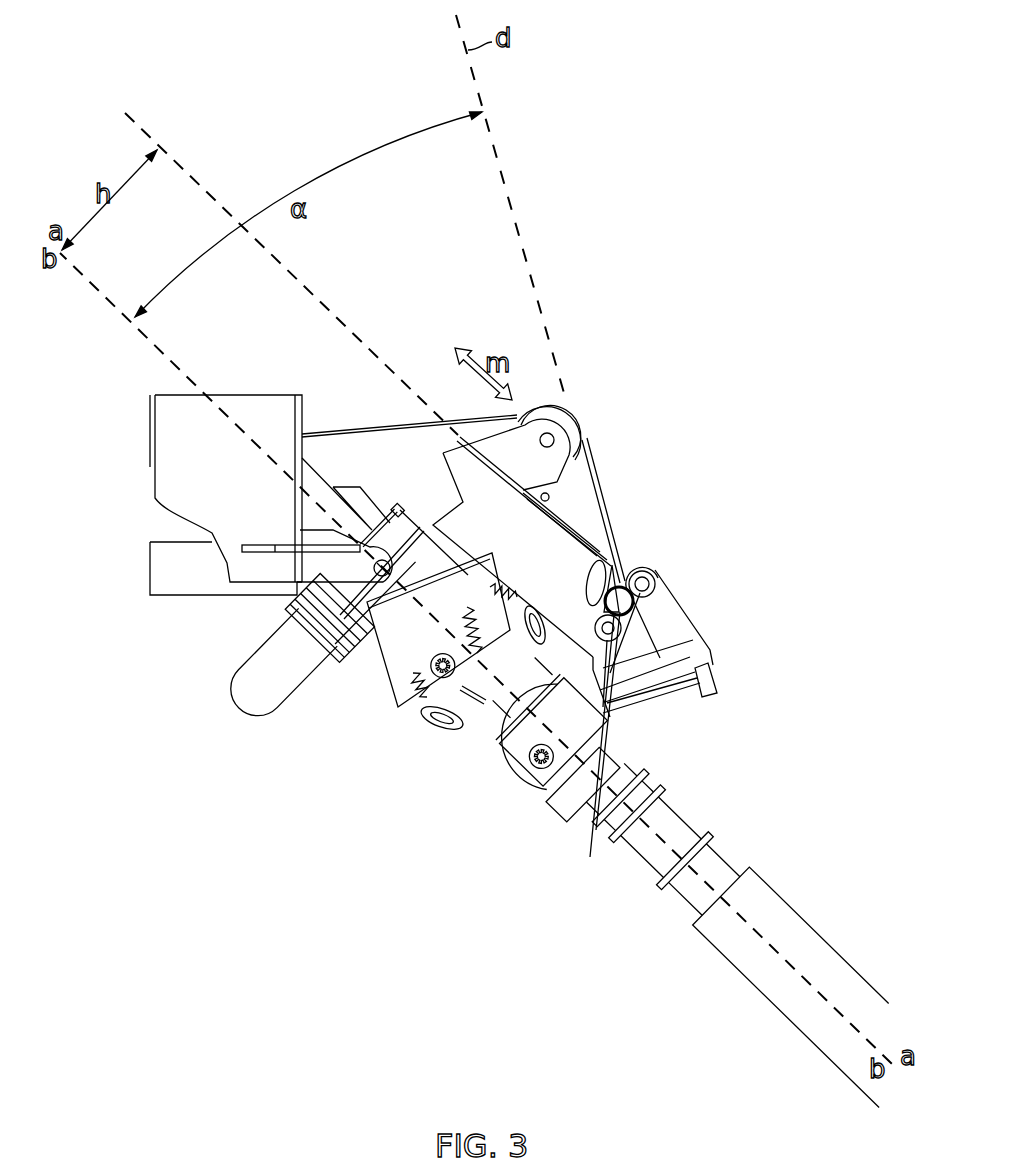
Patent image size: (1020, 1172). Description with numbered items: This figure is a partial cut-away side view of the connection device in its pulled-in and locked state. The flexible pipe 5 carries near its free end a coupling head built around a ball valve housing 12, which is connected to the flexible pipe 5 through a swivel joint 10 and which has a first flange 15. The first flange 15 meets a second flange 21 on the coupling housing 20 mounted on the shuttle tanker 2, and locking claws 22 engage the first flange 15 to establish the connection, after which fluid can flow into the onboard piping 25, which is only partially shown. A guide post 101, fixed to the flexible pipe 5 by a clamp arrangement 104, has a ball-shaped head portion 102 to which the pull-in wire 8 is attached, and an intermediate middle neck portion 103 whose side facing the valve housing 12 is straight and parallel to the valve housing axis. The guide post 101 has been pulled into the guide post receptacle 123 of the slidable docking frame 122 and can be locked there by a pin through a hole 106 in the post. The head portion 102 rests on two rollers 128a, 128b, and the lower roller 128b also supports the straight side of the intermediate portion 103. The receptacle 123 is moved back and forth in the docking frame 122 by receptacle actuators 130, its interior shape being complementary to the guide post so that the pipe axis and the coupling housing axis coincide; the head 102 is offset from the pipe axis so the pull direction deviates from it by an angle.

The shuttle tanker 2 is at (222, 485).
The flexible pipe 5 is at (812, 928).
The pull-in wire 8 is at (595, 480).
The swivel joint 10 is at (660, 793).
The ball valve housing 12 is at (590, 739).
The first flange 15 is at (513, 703).
The coupling housing 20 is at (507, 638).
The second flange 21 is at (473, 700).
The locking claws 22 is at (438, 732).
The piping 25 is at (300, 675).
The guide post 101 is at (672, 641).
The head portion 102 is at (620, 584).
The intermediate middle neck portion 103 is at (593, 613).
The clamp arrangement 104 is at (684, 737).
The hole 106 is at (637, 630).
The docking frame 122 is at (521, 542).
The guide post receptacle 123 is at (670, 595).
The upper roller 128a is at (656, 574).
The lower roller 128b is at (594, 750).
The receptacle actuator 130 is at (578, 522).